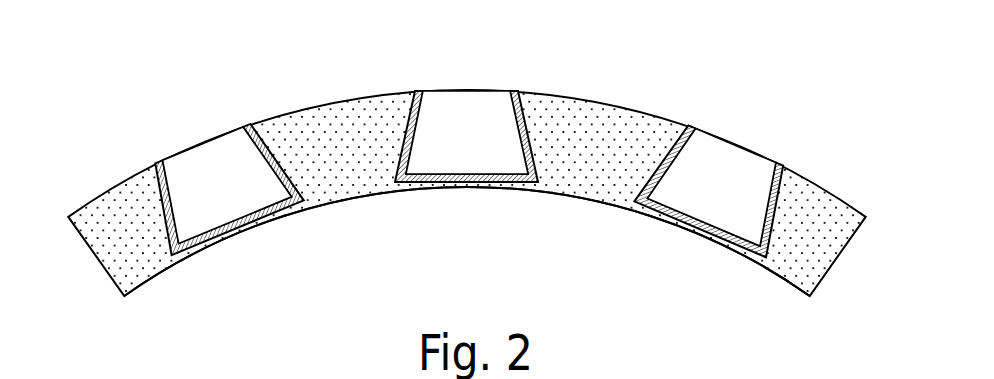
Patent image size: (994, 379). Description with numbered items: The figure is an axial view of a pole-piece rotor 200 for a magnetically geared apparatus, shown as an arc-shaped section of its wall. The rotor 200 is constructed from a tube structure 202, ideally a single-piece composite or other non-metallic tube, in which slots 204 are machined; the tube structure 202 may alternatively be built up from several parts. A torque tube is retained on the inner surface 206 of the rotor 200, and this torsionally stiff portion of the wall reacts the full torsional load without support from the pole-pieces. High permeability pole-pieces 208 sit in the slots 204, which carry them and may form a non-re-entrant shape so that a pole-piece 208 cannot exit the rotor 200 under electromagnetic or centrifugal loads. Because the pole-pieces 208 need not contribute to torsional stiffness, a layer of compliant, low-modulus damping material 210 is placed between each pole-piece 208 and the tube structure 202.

The pole-piece rotor 200 is at (110, 50).
The tube structure 202 is at (466, 174).
The slots 204 is at (469, 154).
The inner surface 206 is at (348, 200).
The pole-pieces 208 is at (468, 147).
The damping material 210 is at (405, 118).